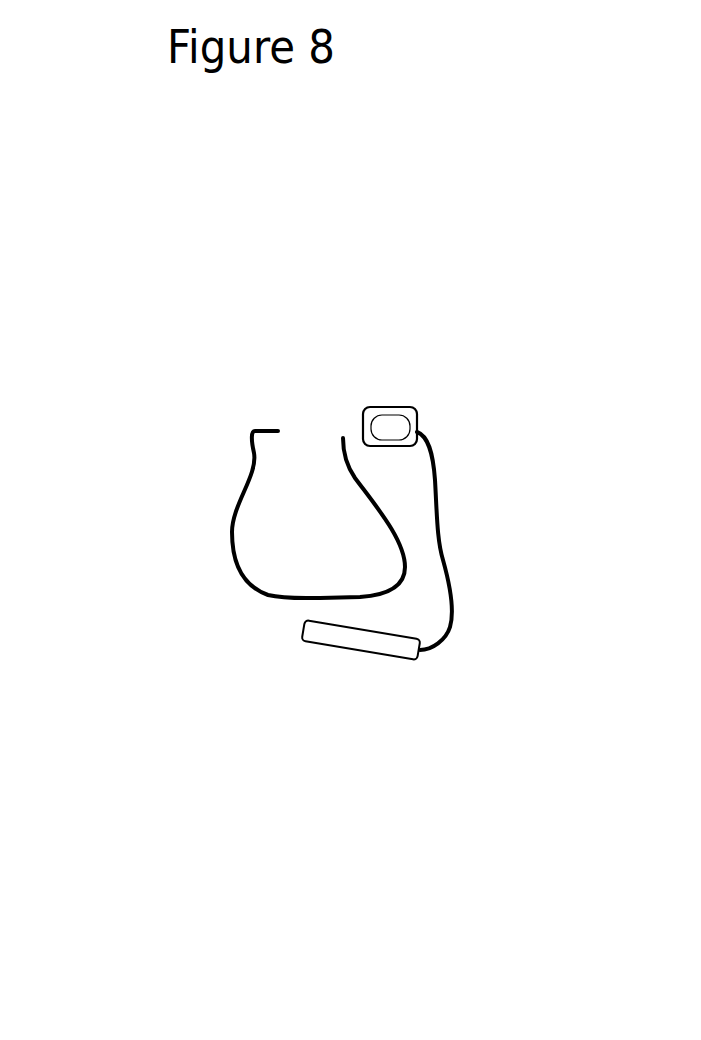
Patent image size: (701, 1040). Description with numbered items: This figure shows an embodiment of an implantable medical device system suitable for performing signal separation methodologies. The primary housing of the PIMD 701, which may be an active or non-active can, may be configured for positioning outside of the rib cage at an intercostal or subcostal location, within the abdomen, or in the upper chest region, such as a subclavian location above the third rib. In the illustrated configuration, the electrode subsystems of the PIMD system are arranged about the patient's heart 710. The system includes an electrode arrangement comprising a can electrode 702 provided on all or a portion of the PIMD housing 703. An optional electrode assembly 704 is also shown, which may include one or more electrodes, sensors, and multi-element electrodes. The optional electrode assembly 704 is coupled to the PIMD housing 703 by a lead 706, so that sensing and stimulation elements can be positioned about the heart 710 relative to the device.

The PIMD 701 is at (390, 395).
The can electrode 702 is at (403, 420).
The PIMD housing 703 is at (367, 407).
The electrode assembly 704 is at (317, 633).
The lead 706 is at (438, 522).
The heart 710 is at (337, 556).